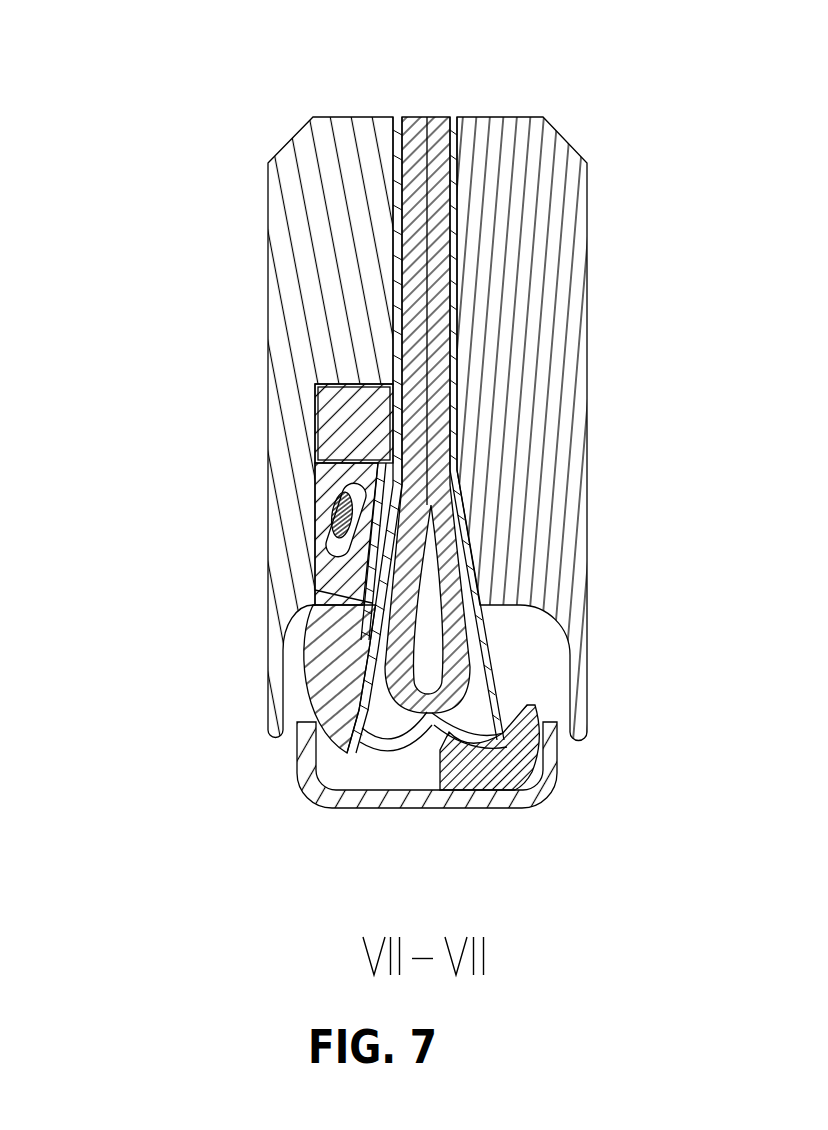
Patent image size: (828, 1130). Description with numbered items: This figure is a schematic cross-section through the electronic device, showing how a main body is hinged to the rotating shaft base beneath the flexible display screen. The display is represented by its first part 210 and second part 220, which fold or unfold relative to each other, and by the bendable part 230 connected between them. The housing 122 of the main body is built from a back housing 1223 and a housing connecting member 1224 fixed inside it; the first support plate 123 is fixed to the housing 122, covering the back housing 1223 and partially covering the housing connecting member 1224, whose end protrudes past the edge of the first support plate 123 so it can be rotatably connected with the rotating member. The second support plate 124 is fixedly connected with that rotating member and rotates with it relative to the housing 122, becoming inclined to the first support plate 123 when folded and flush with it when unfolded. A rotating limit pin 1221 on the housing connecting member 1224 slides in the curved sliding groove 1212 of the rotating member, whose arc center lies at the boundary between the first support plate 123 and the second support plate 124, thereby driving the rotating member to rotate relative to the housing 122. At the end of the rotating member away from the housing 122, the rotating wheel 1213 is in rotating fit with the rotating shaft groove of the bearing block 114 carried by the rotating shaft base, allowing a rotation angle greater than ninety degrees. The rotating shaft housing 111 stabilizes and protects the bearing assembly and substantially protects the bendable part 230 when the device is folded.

The rotating shaft housing 111 is at (465, 805).
The bearing block 114 is at (516, 790).
The housing 122 is at (369, 429).
The first support plate 123 is at (387, 192).
The second support plate 124 is at (368, 690).
The first part 210 is at (415, 114).
The second part 220 is at (450, 114).
The bendable part 230 is at (406, 770).
The curved sliding groove 1212 is at (281, 534).
The rotating wheel 1213 is at (318, 653).
The rotating limit pin 1221 is at (330, 517).
The back housing 1223 is at (317, 272).
The housing connecting member 1224 is at (259, 426).